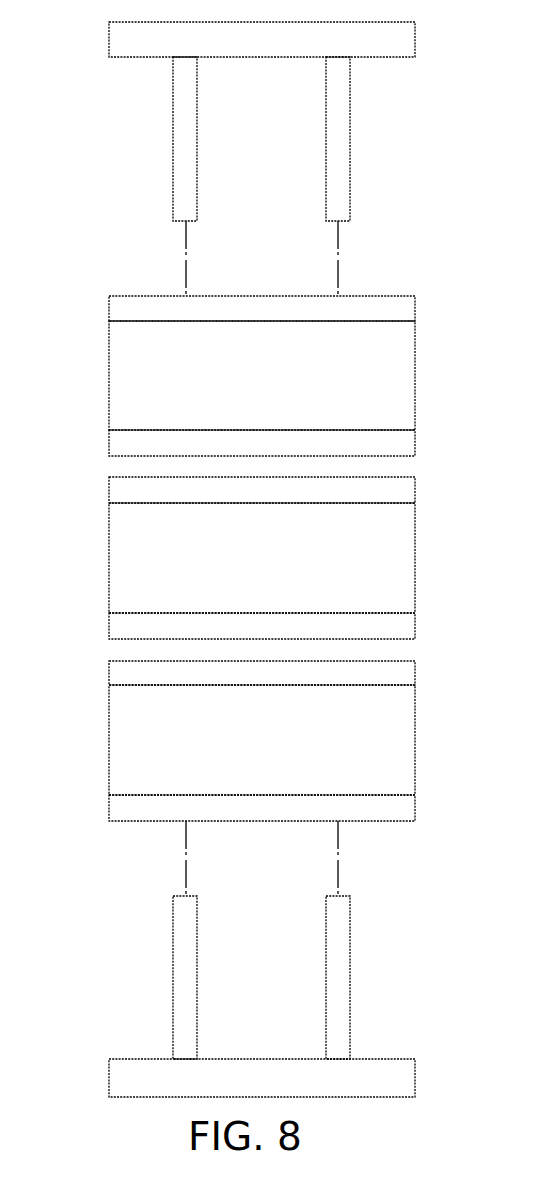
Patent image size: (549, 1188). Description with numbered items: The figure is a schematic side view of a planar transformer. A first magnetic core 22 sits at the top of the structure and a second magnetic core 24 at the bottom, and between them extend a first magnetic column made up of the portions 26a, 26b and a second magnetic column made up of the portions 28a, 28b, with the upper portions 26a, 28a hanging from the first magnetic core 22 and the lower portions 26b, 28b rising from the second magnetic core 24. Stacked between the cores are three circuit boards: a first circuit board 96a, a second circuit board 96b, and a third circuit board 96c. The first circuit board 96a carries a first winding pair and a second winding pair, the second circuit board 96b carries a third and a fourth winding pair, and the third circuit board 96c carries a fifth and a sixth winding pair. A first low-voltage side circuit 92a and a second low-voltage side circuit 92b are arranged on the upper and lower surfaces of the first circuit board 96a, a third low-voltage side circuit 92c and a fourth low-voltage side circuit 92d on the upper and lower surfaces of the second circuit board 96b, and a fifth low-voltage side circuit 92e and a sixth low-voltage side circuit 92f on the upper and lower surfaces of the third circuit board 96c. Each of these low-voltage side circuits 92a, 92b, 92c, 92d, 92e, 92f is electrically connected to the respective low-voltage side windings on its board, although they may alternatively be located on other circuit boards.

The first magnetic core 22 is at (405, 40).
The second magnetic core 24 is at (405, 1080).
The first magnetic column 26a is at (182, 111).
The first magnetic column 26b is at (182, 1005).
The second magnetic column 28a is at (342, 111).
The second magnetic column 28b is at (342, 1005).
The first low-voltage side circuit 92a is at (122, 308).
The second low-voltage side circuit 92b is at (122, 444).
The third low-voltage side circuit 92c is at (122, 491).
The fourth low-voltage side circuit 92d is at (122, 626).
The fifth low-voltage side circuit 92e is at (122, 672).
The sixth low-voltage side circuit 92f is at (122, 807).
The first circuit board 96a is at (415, 321).
The second circuit board 96b is at (415, 503).
The third circuit board 96c is at (415, 685).